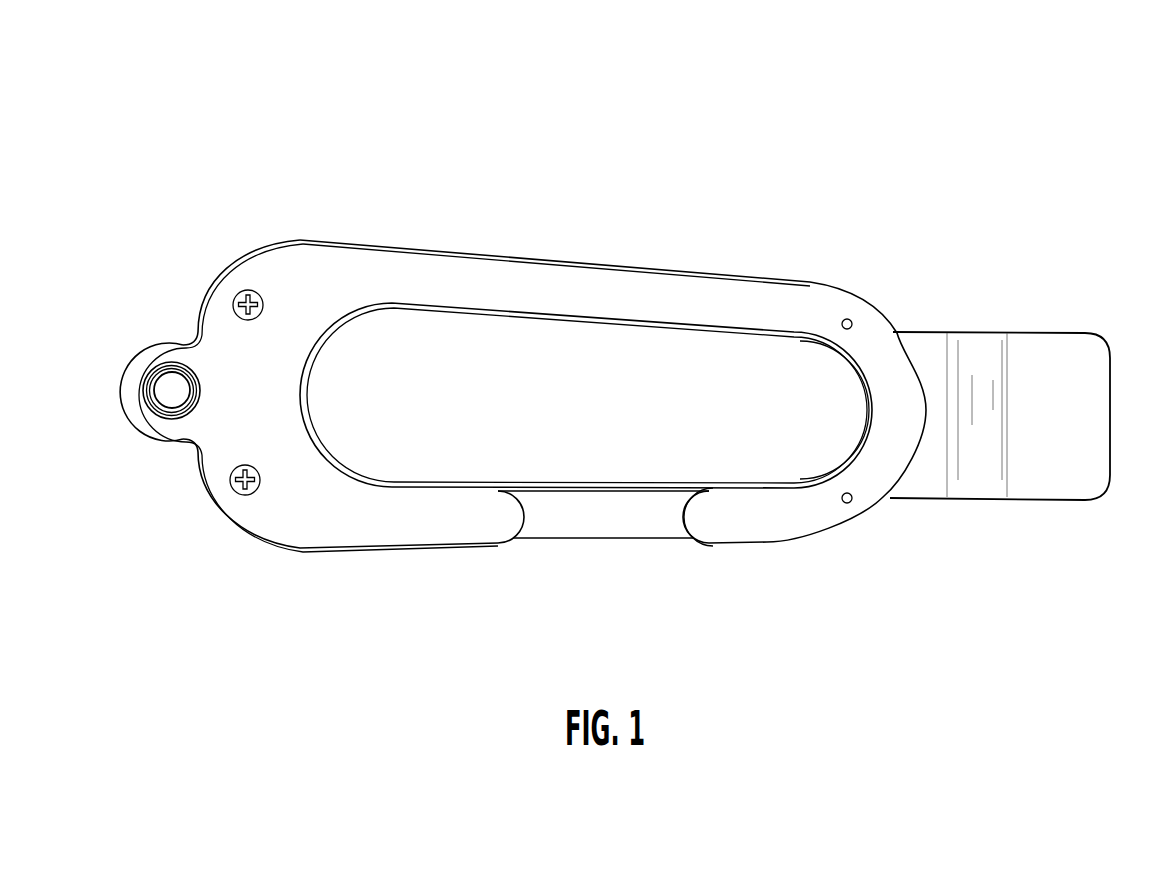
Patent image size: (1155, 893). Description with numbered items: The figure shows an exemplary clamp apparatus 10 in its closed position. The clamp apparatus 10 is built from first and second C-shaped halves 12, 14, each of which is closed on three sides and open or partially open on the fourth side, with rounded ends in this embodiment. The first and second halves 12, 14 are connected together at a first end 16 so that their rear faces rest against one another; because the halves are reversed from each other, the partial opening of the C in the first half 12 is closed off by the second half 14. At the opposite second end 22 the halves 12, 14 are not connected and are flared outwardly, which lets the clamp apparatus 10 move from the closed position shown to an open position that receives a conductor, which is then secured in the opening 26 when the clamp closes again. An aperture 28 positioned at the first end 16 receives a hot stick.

The clamp apparatus 10 is at (935, 98).
The first C-shaped half 12 is at (598, 280).
The second C-shaped half 14 is at (618, 527).
The first end 16 is at (208, 445).
The second end 22 is at (1032, 388).
The opening 26 is at (631, 338).
The aperture 28 is at (152, 368).